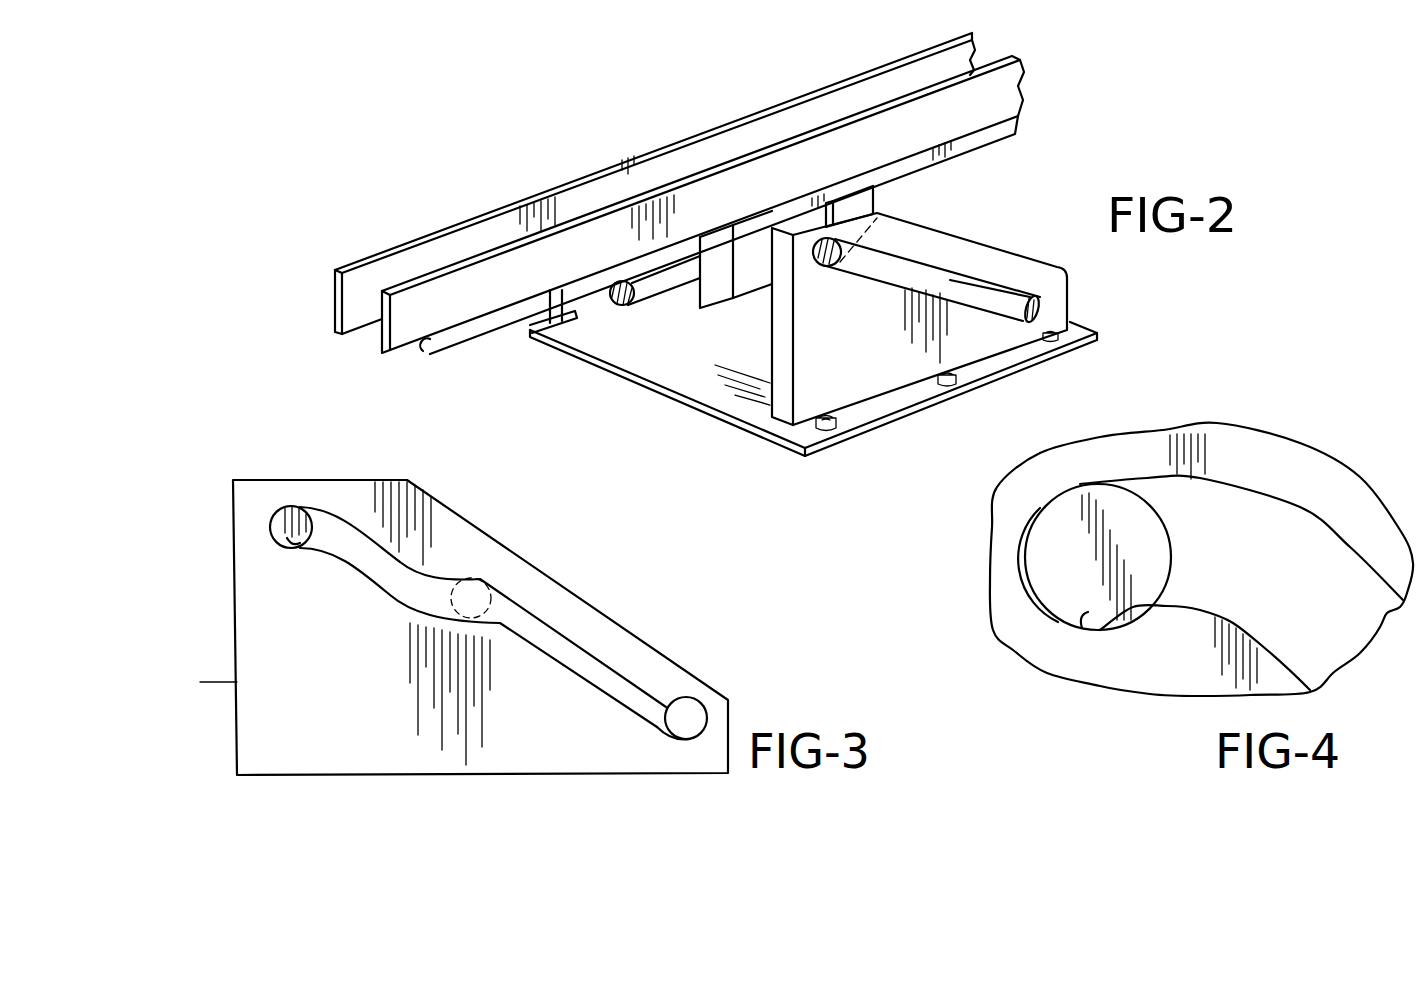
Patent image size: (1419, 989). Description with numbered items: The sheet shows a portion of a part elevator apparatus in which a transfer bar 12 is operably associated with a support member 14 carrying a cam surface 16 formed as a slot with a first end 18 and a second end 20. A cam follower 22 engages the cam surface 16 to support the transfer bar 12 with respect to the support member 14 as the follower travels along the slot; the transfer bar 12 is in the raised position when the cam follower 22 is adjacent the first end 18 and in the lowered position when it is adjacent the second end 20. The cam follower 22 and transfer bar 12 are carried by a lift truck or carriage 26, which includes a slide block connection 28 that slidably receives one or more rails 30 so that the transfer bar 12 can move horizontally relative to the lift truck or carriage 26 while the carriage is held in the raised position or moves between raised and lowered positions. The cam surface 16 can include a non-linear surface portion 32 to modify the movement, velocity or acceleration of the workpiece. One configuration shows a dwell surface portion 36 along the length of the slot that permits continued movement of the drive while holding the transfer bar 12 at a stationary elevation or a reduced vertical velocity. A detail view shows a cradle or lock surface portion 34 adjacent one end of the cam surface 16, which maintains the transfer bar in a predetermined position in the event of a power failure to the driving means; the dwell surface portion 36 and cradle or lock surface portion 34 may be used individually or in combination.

In FIG. 2, the transfer bar 12 is at (430, 235).
In FIG. 2, the support member 14 is at (570, 316).
In FIG. 3, the support member 14 is at (313, 725).
In FIG. 4, the support member 14 is at (1297, 462).
In FIG. 2, the cam surface 16 is at (938, 279).
In FIG. 3, the cam surface 16 is at (362, 562).
In FIG. 4, the cam surface 16 is at (1303, 518).
In FIG. 2, the first end 18 is at (820, 252).
In FIG. 4, the first end 18 is at (1040, 585).
In FIG. 2, the second end 20 is at (1038, 312).
In FIG. 2, the cam follower 22 is at (845, 262).
In FIG. 3, the cam follower 22 is at (318, 525).
In FIG. 4, the cam follower 22 is at (1148, 510).
In FIG. 2, the lift truck or carriage 26 is at (722, 287).
In FIG. 2, the slide block connection 28 is at (752, 224).
In FIG. 2, the rail 30 is at (988, 134).
In FIG. 3, the non-linear surface portion 32 is at (508, 622).
In FIG. 4, the non-linear surface portion 32 is at (1191, 578).
In FIG. 3, the cradle or lock surface portion 34 is at (287, 538).
In FIG. 4, the cradle or lock surface portion 34 is at (1088, 612).
In FIG. 3, the dwell surface portion 36 is at (470, 620).